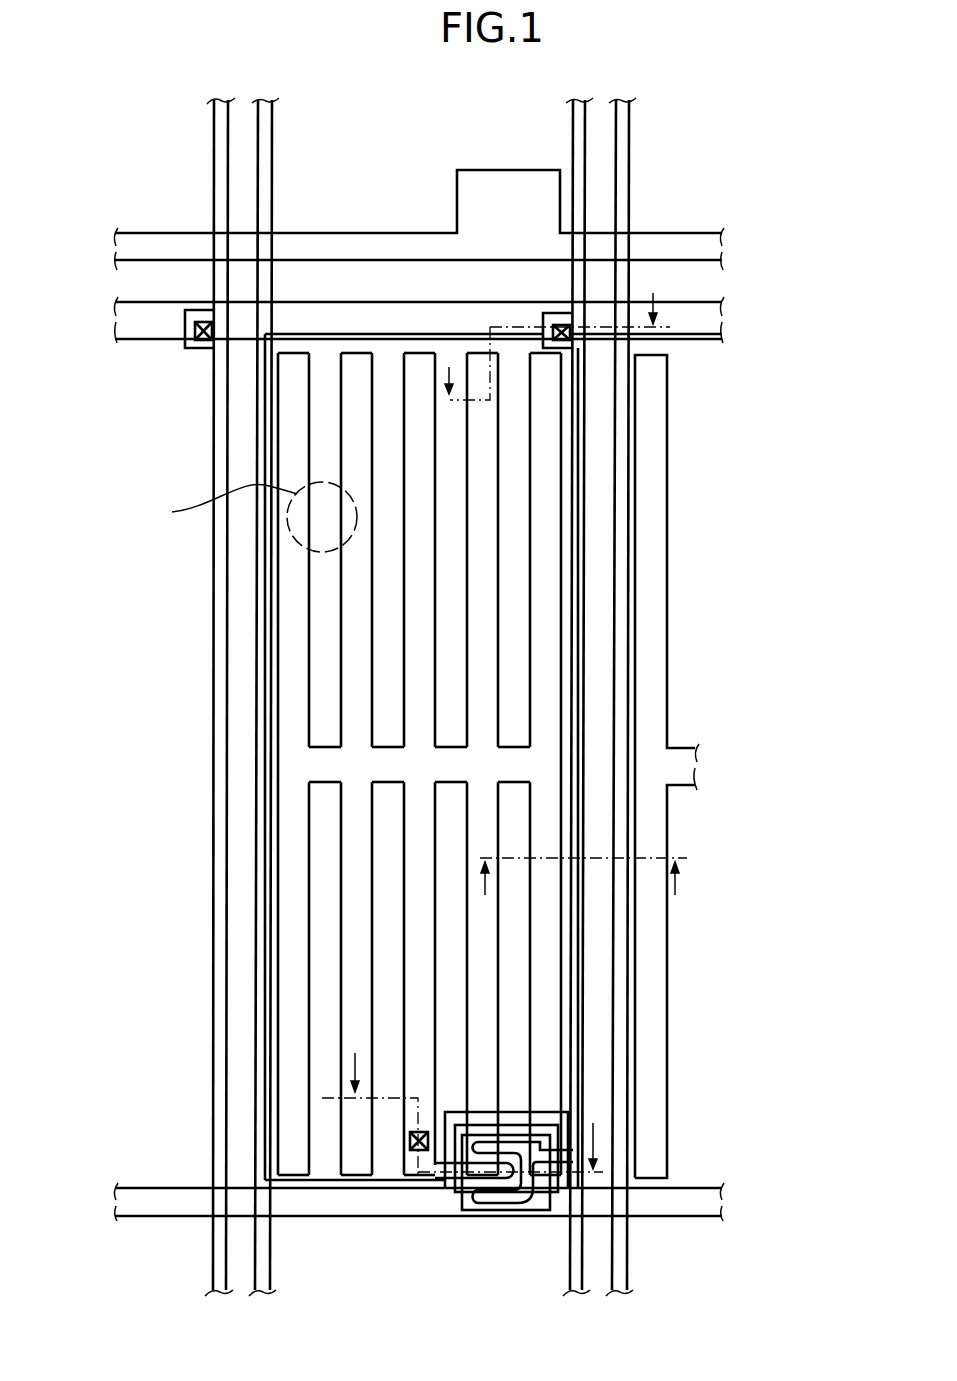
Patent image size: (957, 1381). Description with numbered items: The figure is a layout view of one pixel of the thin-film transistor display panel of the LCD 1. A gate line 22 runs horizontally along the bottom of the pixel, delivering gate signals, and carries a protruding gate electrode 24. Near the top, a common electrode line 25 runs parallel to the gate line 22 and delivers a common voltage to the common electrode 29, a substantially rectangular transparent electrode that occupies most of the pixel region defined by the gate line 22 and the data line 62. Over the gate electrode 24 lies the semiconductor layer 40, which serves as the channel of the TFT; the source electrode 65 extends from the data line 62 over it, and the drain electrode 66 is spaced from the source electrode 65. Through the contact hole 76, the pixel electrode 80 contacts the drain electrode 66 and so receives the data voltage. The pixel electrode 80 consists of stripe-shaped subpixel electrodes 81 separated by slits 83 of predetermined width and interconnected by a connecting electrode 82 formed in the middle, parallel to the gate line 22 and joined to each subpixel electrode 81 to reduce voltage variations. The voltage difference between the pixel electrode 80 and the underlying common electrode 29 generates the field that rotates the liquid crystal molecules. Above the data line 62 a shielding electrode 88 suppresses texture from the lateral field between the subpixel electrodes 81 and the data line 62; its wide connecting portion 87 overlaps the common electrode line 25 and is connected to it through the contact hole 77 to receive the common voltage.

The LCD 1 is at (440, 1358).
The gate line 22 is at (708, 1210).
The gate electrode 24 is at (560, 1186).
The common electrode line 25 is at (705, 321).
The common electrode 29 is at (518, 676).
The semiconductor layer 40 is at (460, 1202).
The data line 62 is at (605, 449).
The source electrode 65 is at (515, 1198).
The drain electrode 66 is at (483, 1178).
The contact hole 76 is at (408, 1142).
The contact hole 77 is at (578, 330).
The pixel electrode 80 is at (549, 764).
The subpixel electrode 81 is at (485, 572).
The connecting electrode 82 is at (550, 748).
The slit 83 is at (452, 530).
The connecting portion 87 is at (560, 318).
The shielding electrode 88 is at (620, 489).